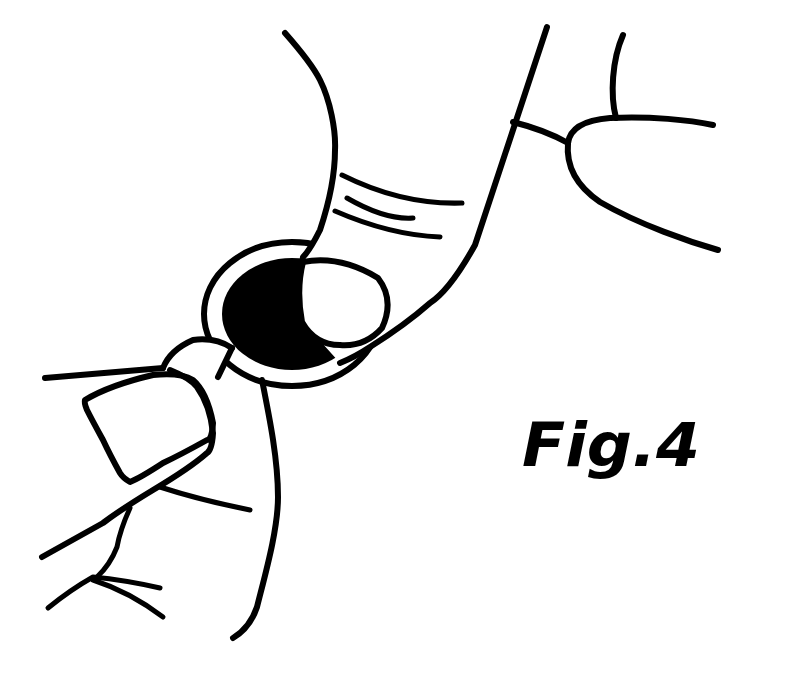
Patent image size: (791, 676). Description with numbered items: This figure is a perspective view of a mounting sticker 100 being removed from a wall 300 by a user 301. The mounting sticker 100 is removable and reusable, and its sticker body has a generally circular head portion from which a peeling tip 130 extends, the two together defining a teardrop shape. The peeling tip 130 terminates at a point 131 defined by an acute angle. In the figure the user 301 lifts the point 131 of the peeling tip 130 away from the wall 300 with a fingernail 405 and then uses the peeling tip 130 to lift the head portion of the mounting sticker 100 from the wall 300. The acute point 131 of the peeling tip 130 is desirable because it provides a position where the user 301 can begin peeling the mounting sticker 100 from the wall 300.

The mounting sticker 100 is at (225, 262).
The peeling tip 130 is at (230, 382).
The point 131 is at (207, 376).
The wall 300 is at (367, 509).
The user 301 is at (273, 543).
The fingernail 405 is at (97, 390).